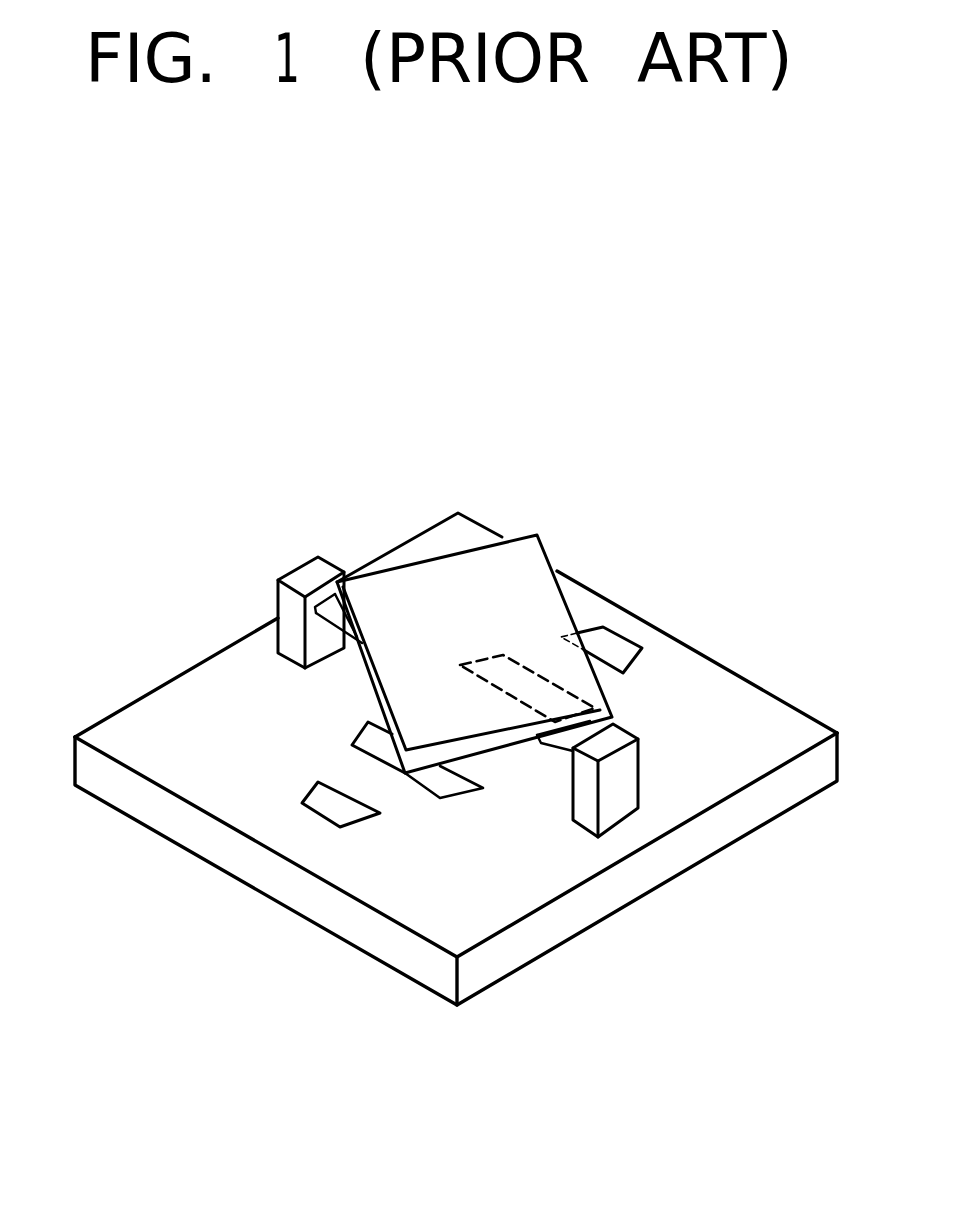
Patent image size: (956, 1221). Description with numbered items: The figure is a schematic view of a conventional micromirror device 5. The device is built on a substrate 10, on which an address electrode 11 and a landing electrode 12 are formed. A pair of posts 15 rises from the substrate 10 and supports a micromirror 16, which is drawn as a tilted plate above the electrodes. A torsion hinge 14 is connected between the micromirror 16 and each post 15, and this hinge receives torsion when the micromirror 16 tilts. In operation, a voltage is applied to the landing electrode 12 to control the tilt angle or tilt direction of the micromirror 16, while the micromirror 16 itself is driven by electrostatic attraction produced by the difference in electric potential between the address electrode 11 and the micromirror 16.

The micromirror device 5 is at (662, 518).
The substrate 10 is at (167, 815).
The address electrode 11 is at (566, 733).
The landing electrode 12 is at (313, 815).
The torsion hinge 14 is at (607, 724).
The post 15 is at (298, 567).
The micromirror 16 is at (512, 555).